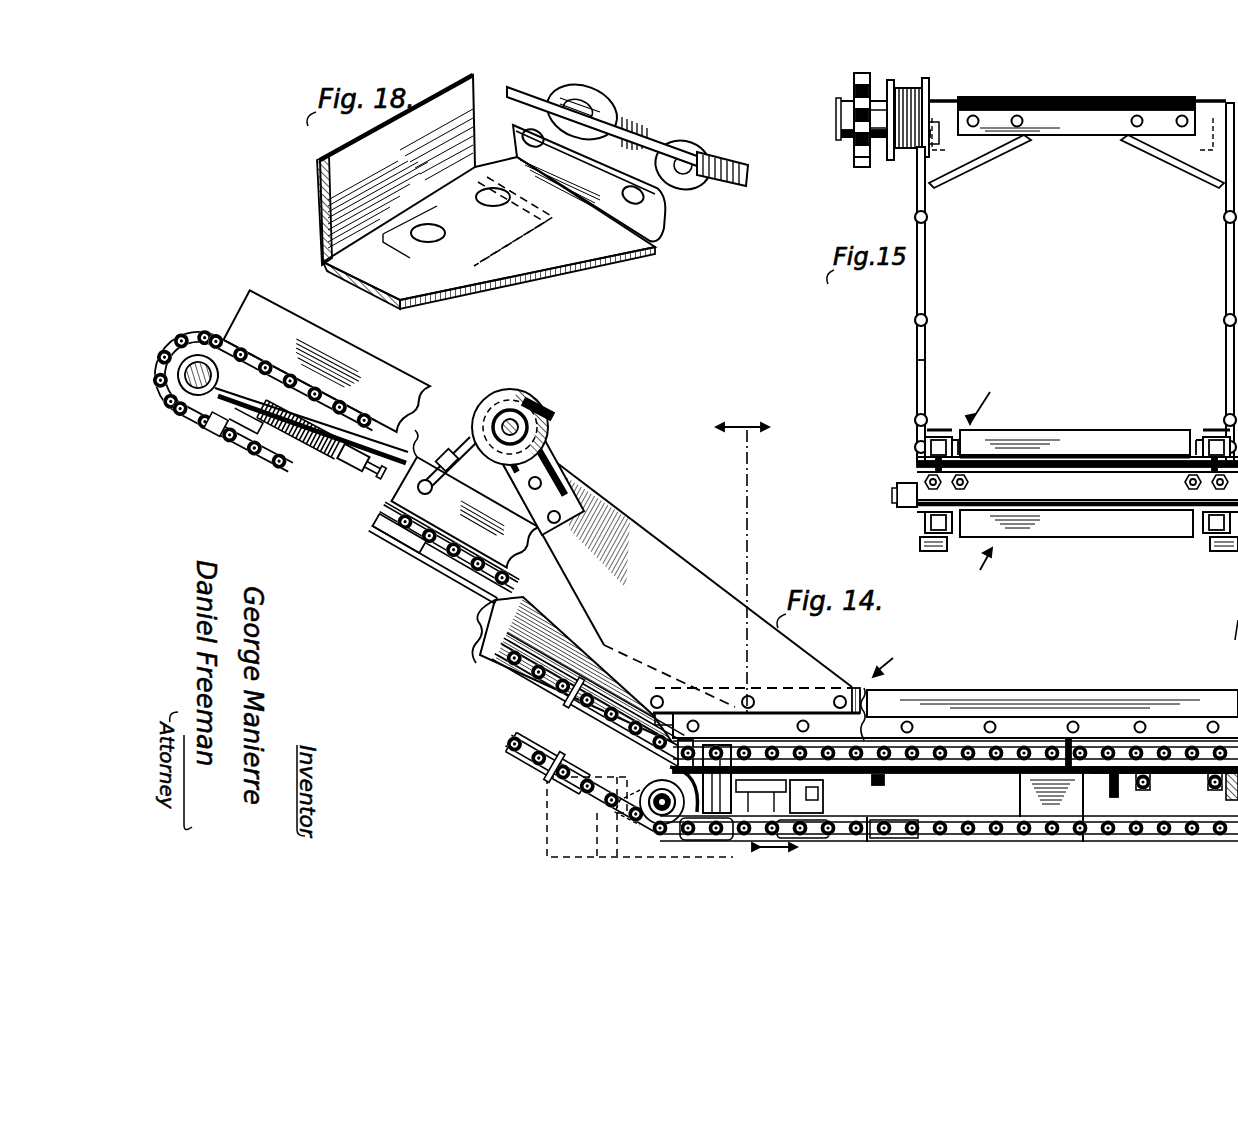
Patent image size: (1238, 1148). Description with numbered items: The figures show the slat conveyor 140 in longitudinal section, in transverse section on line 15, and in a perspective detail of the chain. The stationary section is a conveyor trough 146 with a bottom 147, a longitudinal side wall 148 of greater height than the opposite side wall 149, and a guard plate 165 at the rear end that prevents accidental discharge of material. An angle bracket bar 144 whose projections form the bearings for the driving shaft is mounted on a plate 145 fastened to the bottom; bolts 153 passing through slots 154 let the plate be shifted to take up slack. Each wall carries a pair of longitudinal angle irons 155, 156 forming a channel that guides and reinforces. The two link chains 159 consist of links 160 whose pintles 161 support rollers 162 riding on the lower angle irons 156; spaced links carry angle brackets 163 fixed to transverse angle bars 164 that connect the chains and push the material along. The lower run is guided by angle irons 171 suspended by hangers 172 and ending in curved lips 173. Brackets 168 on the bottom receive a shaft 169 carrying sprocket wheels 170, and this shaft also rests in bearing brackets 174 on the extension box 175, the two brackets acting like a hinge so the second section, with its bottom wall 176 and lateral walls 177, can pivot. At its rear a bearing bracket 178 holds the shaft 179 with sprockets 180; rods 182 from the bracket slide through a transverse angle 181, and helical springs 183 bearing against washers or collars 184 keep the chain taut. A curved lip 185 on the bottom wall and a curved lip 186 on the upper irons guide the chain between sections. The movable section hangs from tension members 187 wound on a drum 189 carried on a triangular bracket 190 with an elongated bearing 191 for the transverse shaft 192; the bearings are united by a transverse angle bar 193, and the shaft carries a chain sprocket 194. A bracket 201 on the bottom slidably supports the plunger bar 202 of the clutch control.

In FIG. 14, the section line 15- 15 is at (756, 635).
In FIG. 15, the conveyor 140 is at (972, 567).
In FIG. 14, the conveyor 140 is at (891, 659).
In FIG. 14, the angle bracket bar 144 is at (1230, 787).
In FIG. 14, the plate 145 is at (1183, 774).
In FIG. 15, the conveyor trough 146 is at (992, 398).
In FIG. 14, the conveyor trough 146 is at (960, 745).
In FIG. 15, the bottom 147 is at (1065, 458).
In FIG. 14, the bottom 147 is at (965, 768).
In FIG. 15, the longitudinal side wall 148 is at (917, 372).
In FIG. 14, the side wall 149 is at (960, 690).
In FIG. 14, the bolts 153 is at (1145, 792).
In FIG. 14, the slots 154 is at (1135, 775).
In FIG. 15, the upper angle iron 155 is at (945, 428).
In FIG. 14, the upper angle iron 155 is at (1033, 735).
In FIG. 15, the lower angle iron 156 is at (923, 455).
In FIG. 14, the lower angle iron 156 is at (1045, 760).
In FIG. 18, the link chains 159 is at (750, 158).
In FIG. 15, the link chains 159 is at (925, 440).
In FIG. 14, the link chains 159 is at (1013, 757).
In FIG. 18, the links 160 is at (585, 80).
In FIG. 14, the links 160 is at (532, 745).
In FIG. 18, the pintles 161 is at (560, 150).
In FIG. 14, the pintles 161 is at (510, 670).
In FIG. 18, the rollers 162 is at (620, 115).
In FIG. 14, the rollers 162 is at (547, 680).
In FIG. 18, the angle brackets 163 is at (653, 243).
In FIG. 15, the angle brackets 163 is at (965, 450).
In FIG. 14, the angle brackets 163 is at (447, 560).
In FIG. 18, the transverse angle bars 164 is at (320, 205).
In FIG. 15, the transverse angle bars 164 is at (1118, 428).
In FIG. 14, the transverse angle bars 164 is at (435, 515).
In FIG. 14, the guard plate 165 is at (1235, 630).
In FIG. 14, the brackets 168 is at (680, 812).
In FIG. 14, the shaft 169 is at (658, 823).
In FIG. 14, the sprocket wheels 170 is at (660, 810).
In FIG. 15, the angle irons 171 is at (917, 513).
In FIG. 14, the angle irons 171 is at (847, 841).
In FIG. 14, the hangers 172 is at (855, 800).
In FIG. 15, the curved lips 173 is at (927, 551).
In FIG. 14, the curved lips 173 is at (754, 841).
In FIG. 14, the bearing brackets 174 is at (653, 768).
In FIG. 14, the extension box 175 is at (406, 494).
In FIG. 14, the bottom wall 176 is at (413, 460).
In FIG. 14, the lateral walls 177 is at (417, 392).
In FIG. 14, the bearing bracket 178 is at (202, 347).
In FIG. 14, the shaft 179 is at (249, 402).
In FIG. 14, the sprockets 180 is at (212, 398).
In FIG. 14, the transverse angle 181 is at (329, 488).
In FIG. 14, the rods 182 is at (310, 458).
In FIG. 14, the helical springs 183 is at (316, 477).
In FIG. 14, the washers or collars 184 is at (236, 447).
In FIG. 14, the curved lip 185 is at (690, 755).
In FIG. 14, the curved lip 186 is at (680, 742).
In FIG. 15, the tension members 187 is at (920, 95).
In FIG. 14, the tension members 187 is at (462, 453).
In FIG. 15, the drum 189 is at (905, 152).
In FIG. 14, the drum 189 is at (499, 402).
In FIG. 15, the bracket 190 is at (925, 266).
In FIG. 14, the bracket 190 is at (636, 528).
In FIG. 15, the elongated bearing 191 is at (944, 100).
In FIG. 14, the elongated bearing 191 is at (516, 420).
In FIG. 15, the transverse shaft 192 is at (841, 128).
In FIG. 14, the transverse shaft 192 is at (528, 412).
In FIG. 15, the transverse angle bar 193 is at (1043, 128).
In FIG. 14, the transverse angle bar 193 is at (552, 410).
In FIG. 15, the chain sprocket 194 is at (862, 165).
In FIG. 14, the bracket 201 is at (944, 713).
In FIG. 14, the bar 202 is at (808, 825).